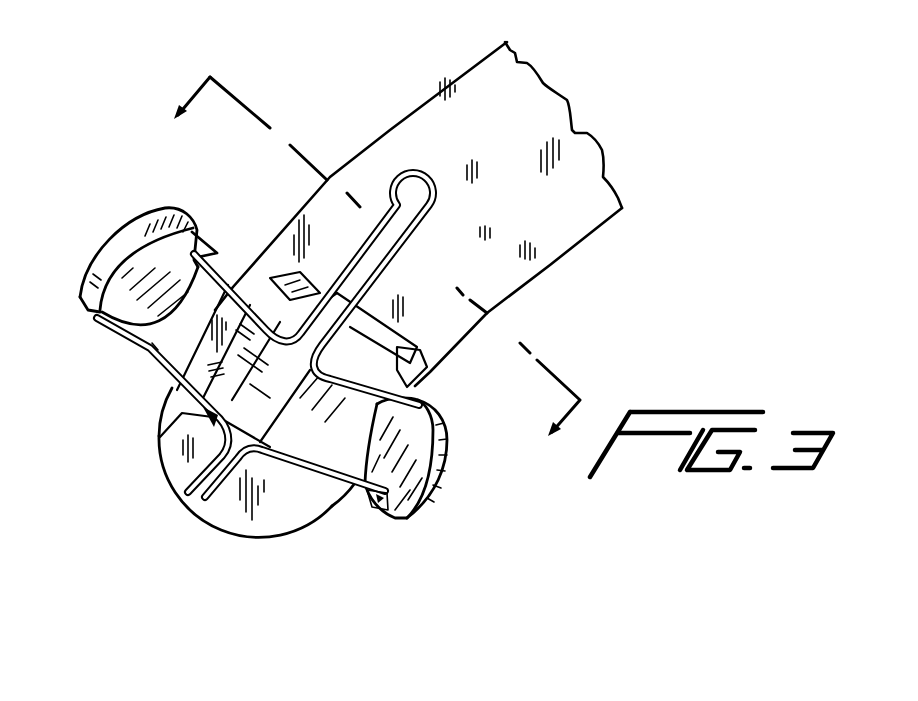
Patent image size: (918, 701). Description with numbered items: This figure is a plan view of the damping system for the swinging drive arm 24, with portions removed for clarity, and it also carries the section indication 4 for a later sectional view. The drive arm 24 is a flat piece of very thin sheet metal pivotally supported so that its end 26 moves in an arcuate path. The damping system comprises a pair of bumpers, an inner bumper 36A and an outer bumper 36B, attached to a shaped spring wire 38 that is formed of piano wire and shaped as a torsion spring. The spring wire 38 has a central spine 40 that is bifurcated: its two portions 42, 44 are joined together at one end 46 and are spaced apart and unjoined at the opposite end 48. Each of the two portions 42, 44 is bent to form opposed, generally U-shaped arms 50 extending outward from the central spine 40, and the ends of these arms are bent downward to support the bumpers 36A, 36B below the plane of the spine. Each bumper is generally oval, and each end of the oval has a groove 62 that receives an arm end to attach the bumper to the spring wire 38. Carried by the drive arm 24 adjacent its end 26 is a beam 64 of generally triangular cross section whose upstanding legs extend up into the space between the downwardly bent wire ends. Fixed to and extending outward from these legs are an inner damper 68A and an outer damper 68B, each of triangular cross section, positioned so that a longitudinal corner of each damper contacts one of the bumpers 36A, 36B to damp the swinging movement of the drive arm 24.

The section line 4- 4 is at (364, 271).
The drive arm 24 is at (578, 159).
The end of drive arm 26 is at (248, 537).
The inner bumper 36A is at (430, 493).
The outer bumper 36B is at (117, 250).
The spring wire 38 is at (153, 345).
The central spine 40 is at (373, 272).
The first portion of bifurcated spine 42 is at (377, 213).
The second portion of bifurcated spine 44 is at (423, 231).
The joined end of spine 46 is at (427, 169).
The unjoined end of spine 48 is at (190, 490).
The U-shaped arms 50 is at (228, 260).
The groove 62 is at (102, 317).
The beam 64 is at (447, 380).
The inner damper 68A is at (410, 343).
The outer damper 68B is at (307, 290).